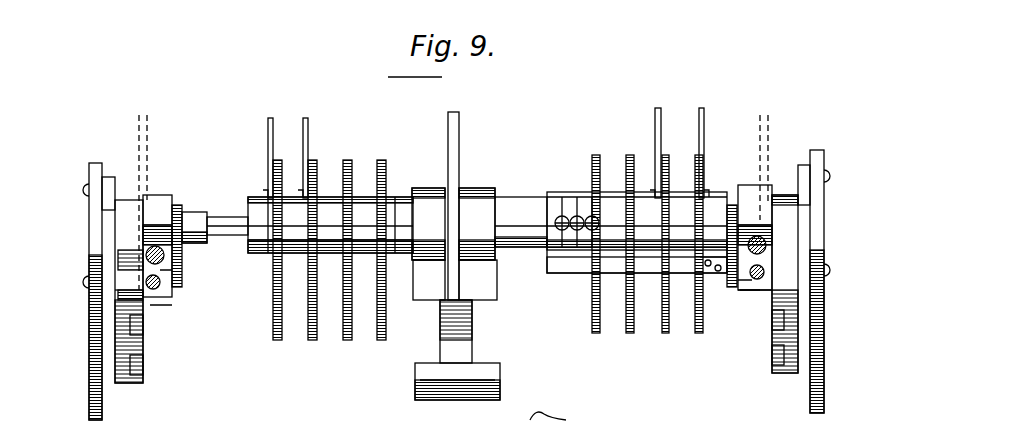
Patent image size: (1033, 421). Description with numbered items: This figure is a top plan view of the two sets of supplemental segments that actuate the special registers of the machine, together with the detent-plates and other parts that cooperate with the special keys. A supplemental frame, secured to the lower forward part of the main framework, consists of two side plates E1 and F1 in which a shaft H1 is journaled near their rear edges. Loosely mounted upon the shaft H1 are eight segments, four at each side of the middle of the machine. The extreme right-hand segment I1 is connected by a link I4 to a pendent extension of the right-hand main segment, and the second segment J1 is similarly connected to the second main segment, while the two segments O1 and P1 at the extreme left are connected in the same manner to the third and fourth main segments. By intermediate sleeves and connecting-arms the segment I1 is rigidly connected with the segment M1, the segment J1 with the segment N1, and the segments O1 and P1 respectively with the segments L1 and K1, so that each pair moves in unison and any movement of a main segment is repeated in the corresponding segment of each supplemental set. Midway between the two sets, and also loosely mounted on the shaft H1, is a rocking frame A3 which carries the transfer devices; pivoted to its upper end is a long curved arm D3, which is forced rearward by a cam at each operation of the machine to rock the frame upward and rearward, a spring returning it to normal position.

The side plate F1 is at (89, 378).
The side plate E1 is at (824, 316).
The rocking frame A3 is at (472, 318).
The shaft H1 is at (218, 216).
The segment I1 is at (703, 333).
The link I4 is at (273, 125).
The segment J1 is at (666, 333).
The segment K1 is at (630, 333).
The segment L1 is at (594, 333).
The segment M1 is at (387, 332).
The segment N1 is at (348, 340).
The segment O1 is at (313, 340).
The segment P1 is at (278, 340).
The curved arm D3 is at (459, 145).